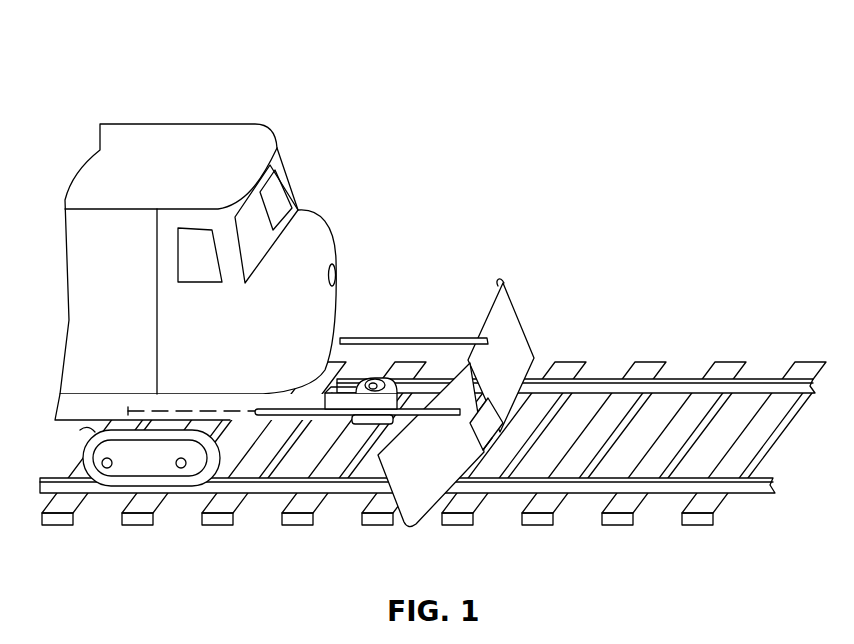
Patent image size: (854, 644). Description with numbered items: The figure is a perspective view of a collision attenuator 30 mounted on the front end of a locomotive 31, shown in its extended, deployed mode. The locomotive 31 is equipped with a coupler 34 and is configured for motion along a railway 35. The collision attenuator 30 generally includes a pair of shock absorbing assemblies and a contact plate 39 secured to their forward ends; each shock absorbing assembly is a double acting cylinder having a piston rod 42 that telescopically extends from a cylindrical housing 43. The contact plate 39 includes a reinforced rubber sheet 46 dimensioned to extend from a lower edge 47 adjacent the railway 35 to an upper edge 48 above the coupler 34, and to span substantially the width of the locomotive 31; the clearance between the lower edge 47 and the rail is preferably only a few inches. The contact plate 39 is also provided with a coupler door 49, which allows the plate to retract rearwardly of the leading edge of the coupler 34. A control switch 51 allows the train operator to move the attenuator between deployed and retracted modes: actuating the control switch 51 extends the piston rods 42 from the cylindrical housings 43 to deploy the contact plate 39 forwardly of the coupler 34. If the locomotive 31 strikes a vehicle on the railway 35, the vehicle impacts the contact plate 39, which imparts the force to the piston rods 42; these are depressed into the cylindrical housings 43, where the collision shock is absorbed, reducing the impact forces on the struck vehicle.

The collision attenuator 30 is at (531, 369).
The locomotive 31 is at (252, 248).
The coupler 34 is at (358, 368).
The railway 35 is at (683, 364).
The contact plate 39 is at (525, 315).
The piston rod 42 is at (400, 399).
The cylindrical housing 43 is at (194, 409).
The reinforced rubber sheet 46 is at (439, 480).
The lower edge 47 is at (535, 365).
The upper edge 48 is at (498, 283).
The coupler door 49 is at (502, 456).
The control switch 51 is at (257, 222).